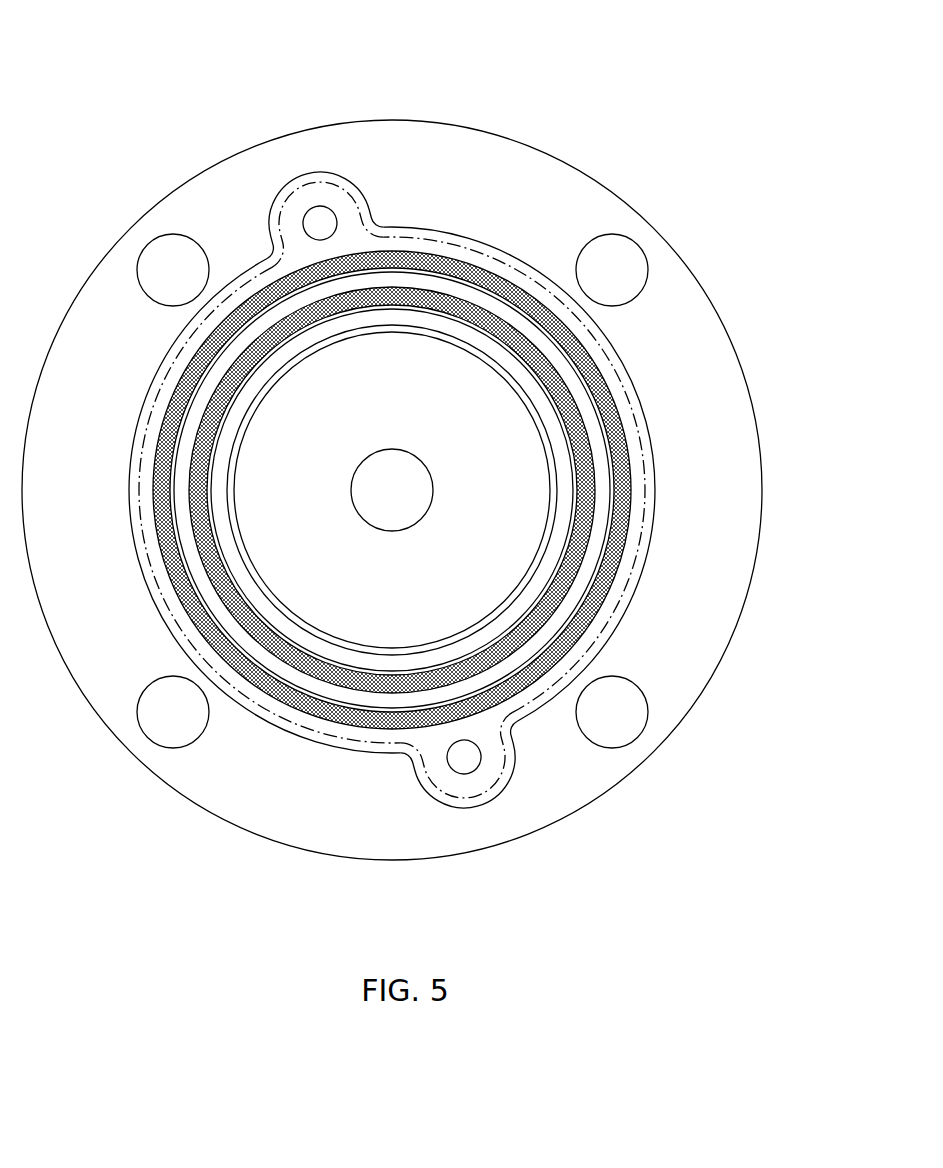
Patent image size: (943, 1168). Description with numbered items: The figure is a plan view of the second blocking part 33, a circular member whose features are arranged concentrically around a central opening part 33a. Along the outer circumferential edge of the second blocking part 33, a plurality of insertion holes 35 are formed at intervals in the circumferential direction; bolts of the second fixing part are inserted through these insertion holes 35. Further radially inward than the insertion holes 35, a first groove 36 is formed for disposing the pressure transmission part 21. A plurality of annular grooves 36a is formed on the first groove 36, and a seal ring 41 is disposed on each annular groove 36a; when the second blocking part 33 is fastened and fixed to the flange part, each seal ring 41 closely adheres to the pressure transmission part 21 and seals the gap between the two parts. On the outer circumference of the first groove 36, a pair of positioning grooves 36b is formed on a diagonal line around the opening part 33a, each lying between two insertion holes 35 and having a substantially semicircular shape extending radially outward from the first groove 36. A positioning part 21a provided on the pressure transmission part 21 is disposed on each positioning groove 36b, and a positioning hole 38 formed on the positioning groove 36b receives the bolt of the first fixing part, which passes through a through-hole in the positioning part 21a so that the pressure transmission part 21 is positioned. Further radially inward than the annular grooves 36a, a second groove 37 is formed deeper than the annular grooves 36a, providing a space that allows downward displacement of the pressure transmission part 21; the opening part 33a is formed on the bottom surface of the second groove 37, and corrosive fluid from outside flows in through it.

The pressure transmission part 21 is at (490, 252).
The positioning part 21a is at (326, 174).
The second blocking part 33 is at (365, 118).
The opening part 33a is at (355, 484).
The insertion hole 35 is at (138, 273).
The first groove 36 is at (436, 232).
The annular groove 36a is at (577, 488).
The positioning groove 36b is at (360, 204).
The second groove 37 is at (546, 562).
The positioning hole 38 is at (305, 230).
The seal ring 41 is at (578, 415).